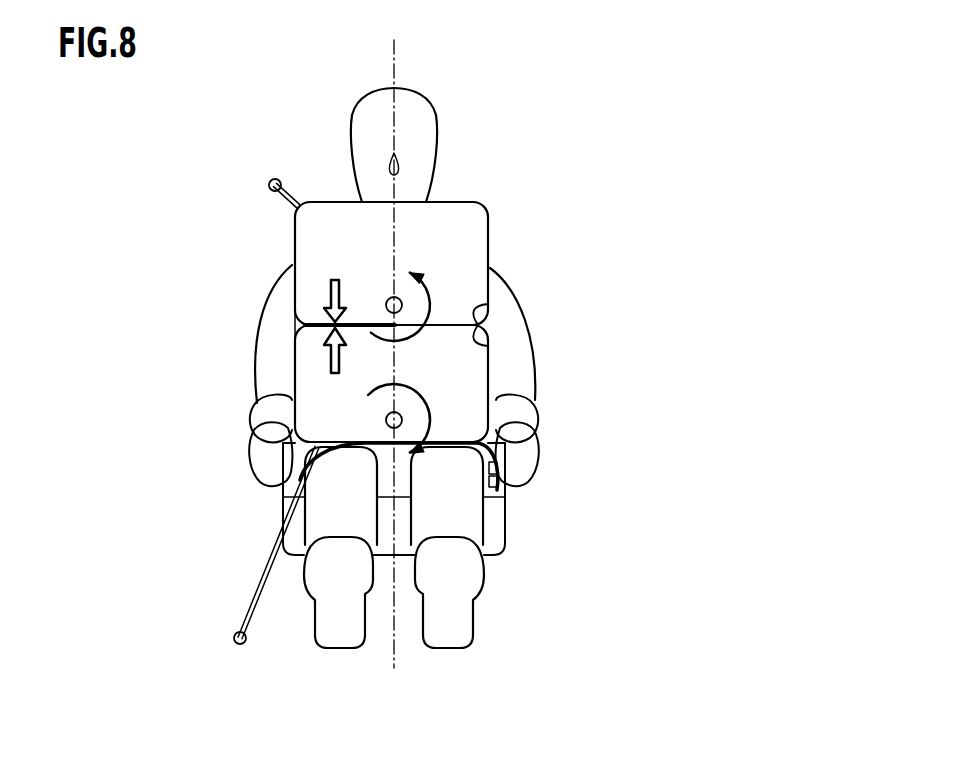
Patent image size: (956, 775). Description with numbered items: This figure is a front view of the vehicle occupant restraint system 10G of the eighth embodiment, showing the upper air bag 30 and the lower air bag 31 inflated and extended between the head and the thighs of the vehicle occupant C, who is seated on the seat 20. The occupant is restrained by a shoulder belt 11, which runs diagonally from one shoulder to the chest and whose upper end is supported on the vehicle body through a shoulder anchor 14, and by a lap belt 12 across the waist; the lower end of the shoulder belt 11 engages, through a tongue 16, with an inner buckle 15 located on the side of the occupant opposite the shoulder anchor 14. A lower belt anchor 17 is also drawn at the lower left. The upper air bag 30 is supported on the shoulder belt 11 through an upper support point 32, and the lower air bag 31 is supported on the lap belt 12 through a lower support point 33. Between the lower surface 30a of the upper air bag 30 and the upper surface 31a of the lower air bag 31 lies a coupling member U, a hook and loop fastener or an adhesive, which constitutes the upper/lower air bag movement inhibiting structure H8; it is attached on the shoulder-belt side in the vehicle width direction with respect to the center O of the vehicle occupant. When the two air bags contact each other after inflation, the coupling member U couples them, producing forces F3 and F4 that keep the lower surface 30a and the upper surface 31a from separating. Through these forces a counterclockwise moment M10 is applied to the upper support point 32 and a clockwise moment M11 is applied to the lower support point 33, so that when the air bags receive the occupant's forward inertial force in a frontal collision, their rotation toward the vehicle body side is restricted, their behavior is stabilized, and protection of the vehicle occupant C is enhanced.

The center of the vehicle occupant O is at (393, 73).
The vehicle occupant C is at (345, 105).
The vehicle occupant restraint system 10G is at (528, 117).
The upper air bag 30 is at (352, 225).
The lower air bag 31 is at (327, 400).
The shoulder anchor 14 is at (268, 185).
The shoulder belt 11 is at (290, 208).
The force F3 is at (330, 282).
The upper support point 32 is at (386, 305).
The coupling member U is at (299, 325).
The force F4 is at (330, 372).
The lower support point 33 is at (385, 420).
The counterclockwise moment M10 is at (432, 293).
The clockwise moment M11 is at (428, 407).
The upper/lower air bag movement inhibiting structure H8 is at (513, 263).
The upper surface of the lower air bag 31a is at (478, 306).
The lower surface of the upper air bag 30a is at (478, 344).
The lap belt 12 is at (298, 452).
The lap anchor 17 is at (233, 637).
The tongue 16 is at (497, 468).
The inner buckle 15 is at (498, 482).
The seat 20 is at (518, 522).